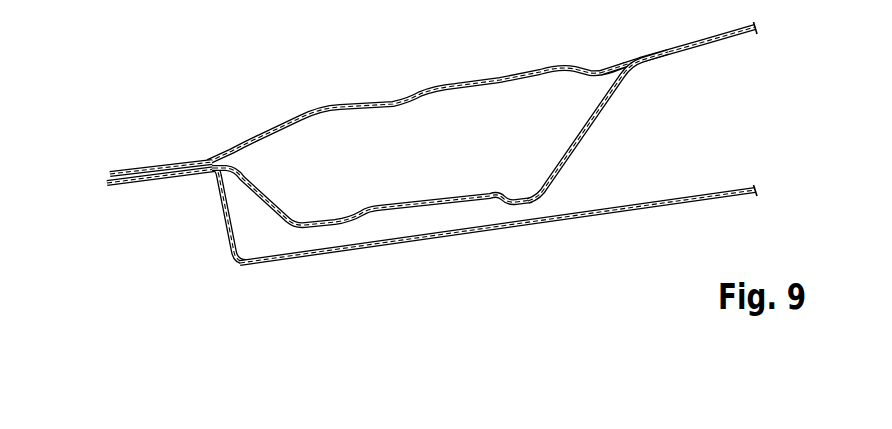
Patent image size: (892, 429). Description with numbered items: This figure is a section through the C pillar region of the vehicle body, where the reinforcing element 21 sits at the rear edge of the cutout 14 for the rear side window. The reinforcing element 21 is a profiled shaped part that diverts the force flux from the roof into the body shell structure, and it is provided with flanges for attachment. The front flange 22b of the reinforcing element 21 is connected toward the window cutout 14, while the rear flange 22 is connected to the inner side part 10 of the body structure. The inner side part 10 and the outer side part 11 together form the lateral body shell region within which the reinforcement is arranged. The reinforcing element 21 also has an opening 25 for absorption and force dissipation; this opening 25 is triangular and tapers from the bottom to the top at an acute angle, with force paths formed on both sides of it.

The inner side part 10 is at (457, 82).
The outer side part 11 is at (437, 246).
The cutout 14 is at (62, 198).
The reinforcing element 21 is at (590, 132).
The rear flange 22 is at (667, 57).
The front flange 22b is at (172, 163).
The opening 25 is at (433, 198).